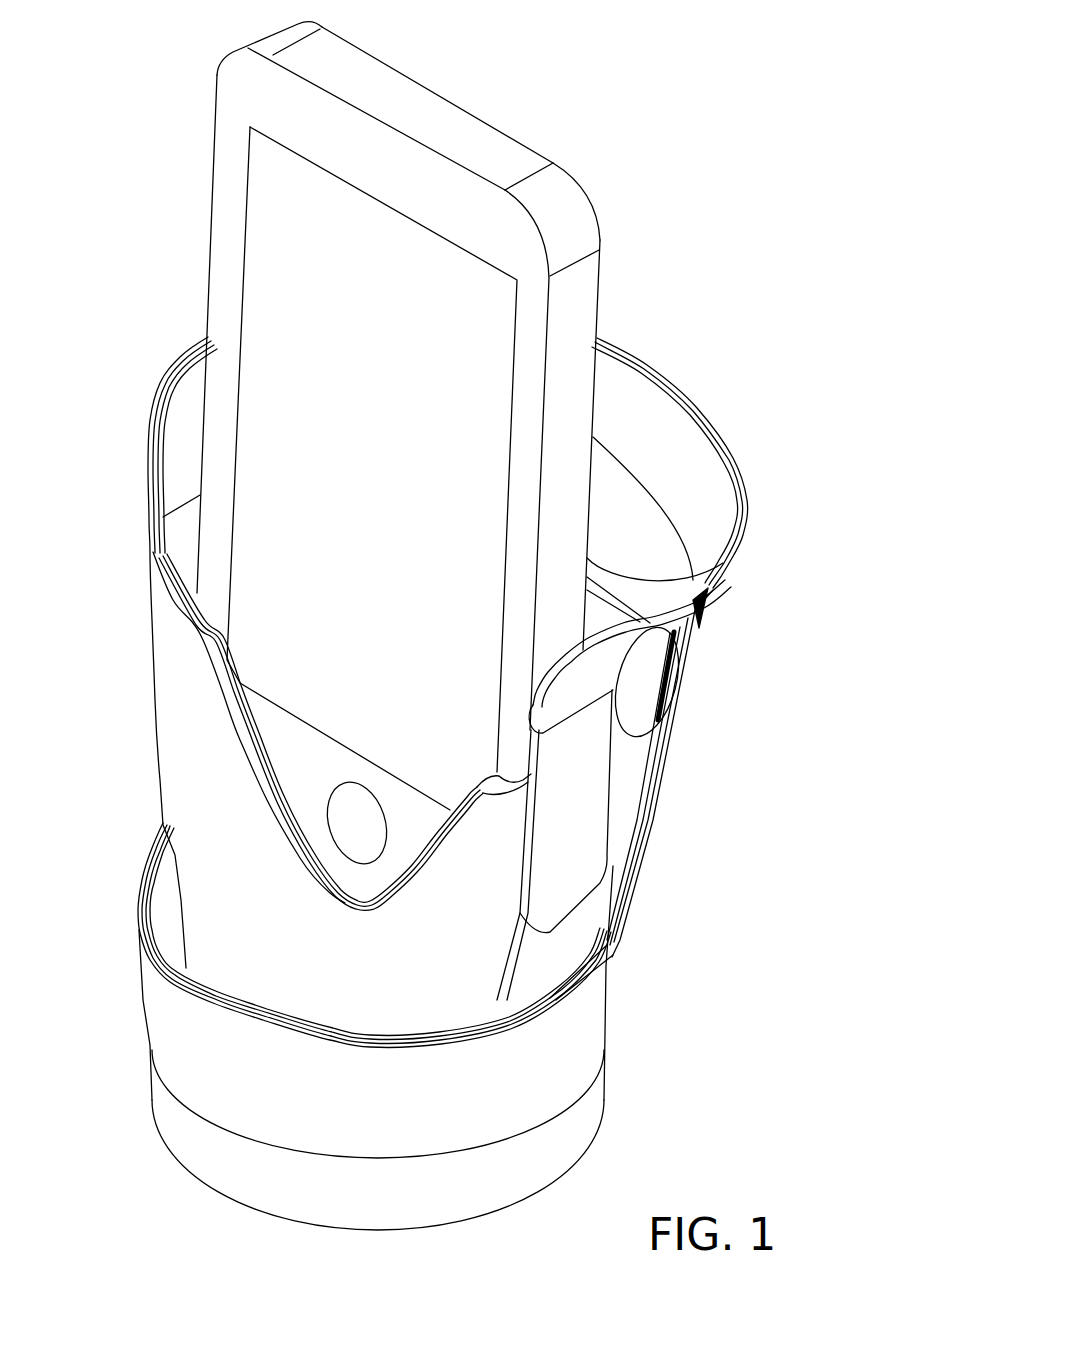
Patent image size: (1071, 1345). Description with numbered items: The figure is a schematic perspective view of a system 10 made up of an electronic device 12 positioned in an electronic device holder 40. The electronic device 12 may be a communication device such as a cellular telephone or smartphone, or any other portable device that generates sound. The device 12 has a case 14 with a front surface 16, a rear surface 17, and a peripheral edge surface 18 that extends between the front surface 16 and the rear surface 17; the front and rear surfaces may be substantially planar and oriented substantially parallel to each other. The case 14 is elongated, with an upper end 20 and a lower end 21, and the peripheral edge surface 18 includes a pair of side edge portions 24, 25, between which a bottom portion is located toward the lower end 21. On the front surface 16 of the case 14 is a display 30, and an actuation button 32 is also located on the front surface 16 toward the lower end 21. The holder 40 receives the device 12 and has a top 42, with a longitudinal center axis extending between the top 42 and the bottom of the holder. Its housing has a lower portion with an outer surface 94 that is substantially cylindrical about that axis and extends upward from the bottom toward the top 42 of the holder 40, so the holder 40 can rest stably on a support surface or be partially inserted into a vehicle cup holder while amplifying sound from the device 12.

The system 10 is at (625, 84).
The electronic device 12 is at (615, 270).
The case 14 is at (200, 195).
The front surface 16 is at (255, 92).
The rear surface 17 is at (450, 97).
The peripheral edge surface 18 is at (497, 155).
The upper end 20 is at (213, 40).
The lower end 21 is at (300, 760).
The side edge portion 24 is at (210, 165).
The side edge portion 25 is at (570, 317).
The display 30 is at (270, 295).
The actuation button 32 is at (347, 810).
The electronic device holder 40 is at (680, 370).
The top 42 is at (715, 405).
The outer surface 94 is at (175, 1003).